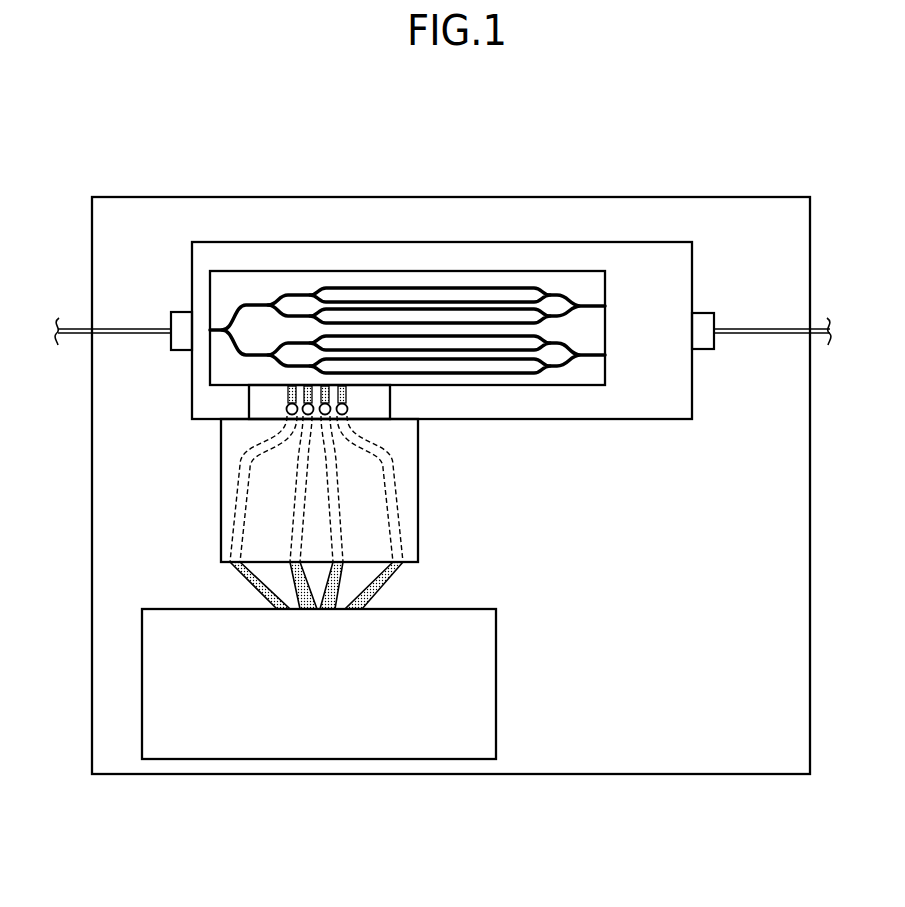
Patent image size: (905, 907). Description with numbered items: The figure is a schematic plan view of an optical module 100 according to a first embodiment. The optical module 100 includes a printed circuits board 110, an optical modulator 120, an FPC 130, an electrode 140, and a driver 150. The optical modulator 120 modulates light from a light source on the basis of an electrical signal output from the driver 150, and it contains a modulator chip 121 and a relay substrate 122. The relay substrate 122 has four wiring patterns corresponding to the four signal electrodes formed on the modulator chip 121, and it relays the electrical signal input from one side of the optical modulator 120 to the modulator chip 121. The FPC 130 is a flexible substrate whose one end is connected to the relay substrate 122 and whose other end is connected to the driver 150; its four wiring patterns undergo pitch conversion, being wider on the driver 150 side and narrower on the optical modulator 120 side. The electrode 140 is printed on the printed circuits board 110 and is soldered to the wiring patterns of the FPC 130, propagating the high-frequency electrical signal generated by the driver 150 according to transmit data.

The optical module 100 is at (775, 163).
The printed circuits board 110 is at (633, 197).
The optical modulator 120 is at (633, 242).
The modulator chip 121 is at (605, 288).
The relay substrate 122 is at (391, 405).
The FPC 130 is at (418, 464).
The electrode 140 is at (380, 590).
The driver 150 is at (496, 633).